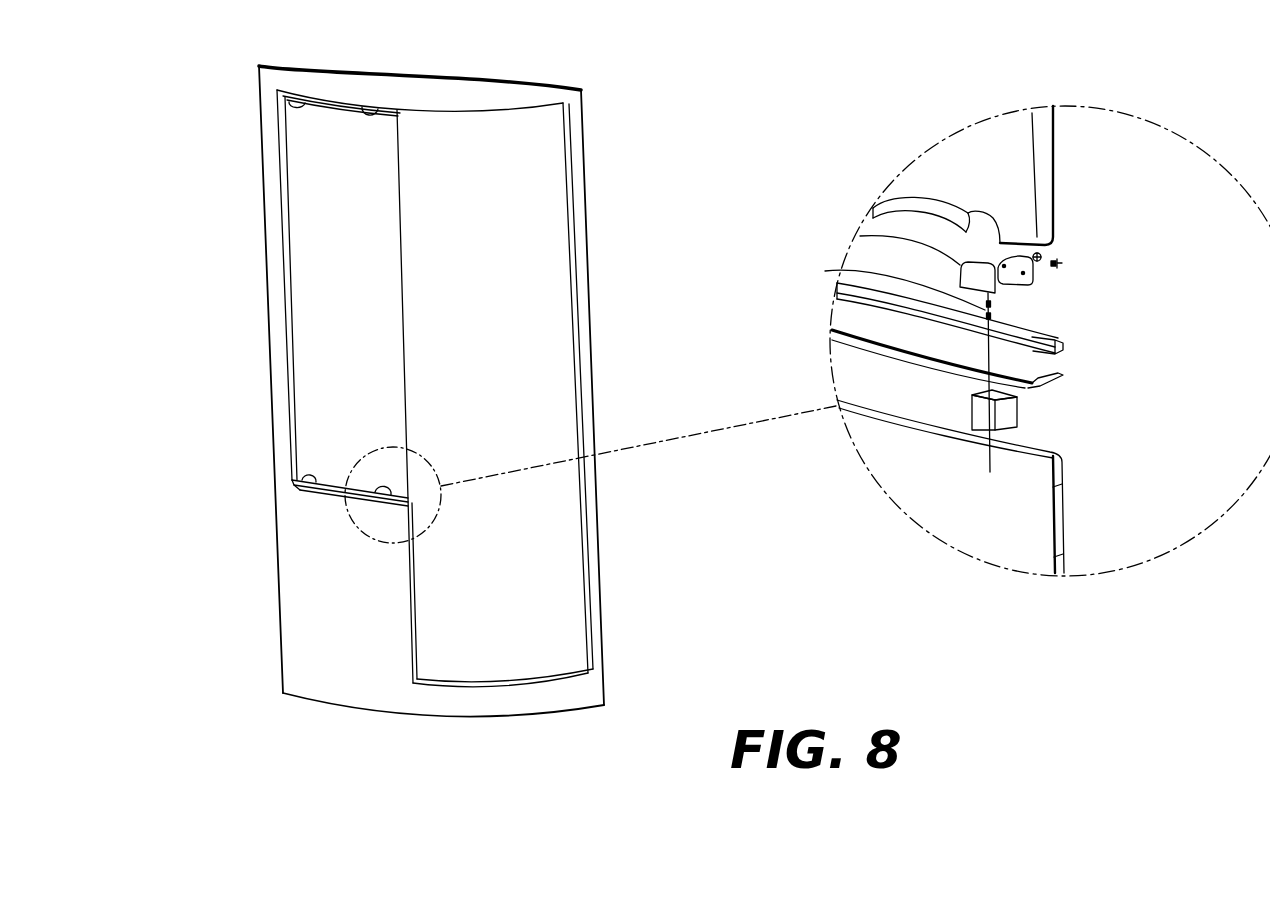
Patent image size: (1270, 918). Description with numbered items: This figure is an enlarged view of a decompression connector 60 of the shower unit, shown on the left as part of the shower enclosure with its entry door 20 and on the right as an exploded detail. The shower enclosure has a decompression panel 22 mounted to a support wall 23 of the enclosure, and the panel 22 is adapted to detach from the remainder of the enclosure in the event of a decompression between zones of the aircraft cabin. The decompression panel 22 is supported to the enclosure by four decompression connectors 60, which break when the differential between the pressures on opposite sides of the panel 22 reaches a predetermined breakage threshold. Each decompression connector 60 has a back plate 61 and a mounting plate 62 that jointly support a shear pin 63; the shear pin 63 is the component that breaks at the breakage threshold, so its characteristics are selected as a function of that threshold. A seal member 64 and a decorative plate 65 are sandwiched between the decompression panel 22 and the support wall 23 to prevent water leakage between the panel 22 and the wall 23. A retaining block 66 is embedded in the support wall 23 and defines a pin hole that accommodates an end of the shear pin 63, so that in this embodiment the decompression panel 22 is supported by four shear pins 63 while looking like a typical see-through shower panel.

The entry door 20 is at (481, 264).
The decompression panel 22 is at (353, 287).
The support wall 23 is at (337, 647).
The decompression connector 60 is at (367, 114).
The back plate 61 is at (885, 202).
The mounting plate 62 is at (860, 235).
The shear pin 63 is at (838, 268).
The seal member 64 is at (878, 318).
The decorative plate 65 is at (960, 366).
The retaining block 66 is at (970, 410).